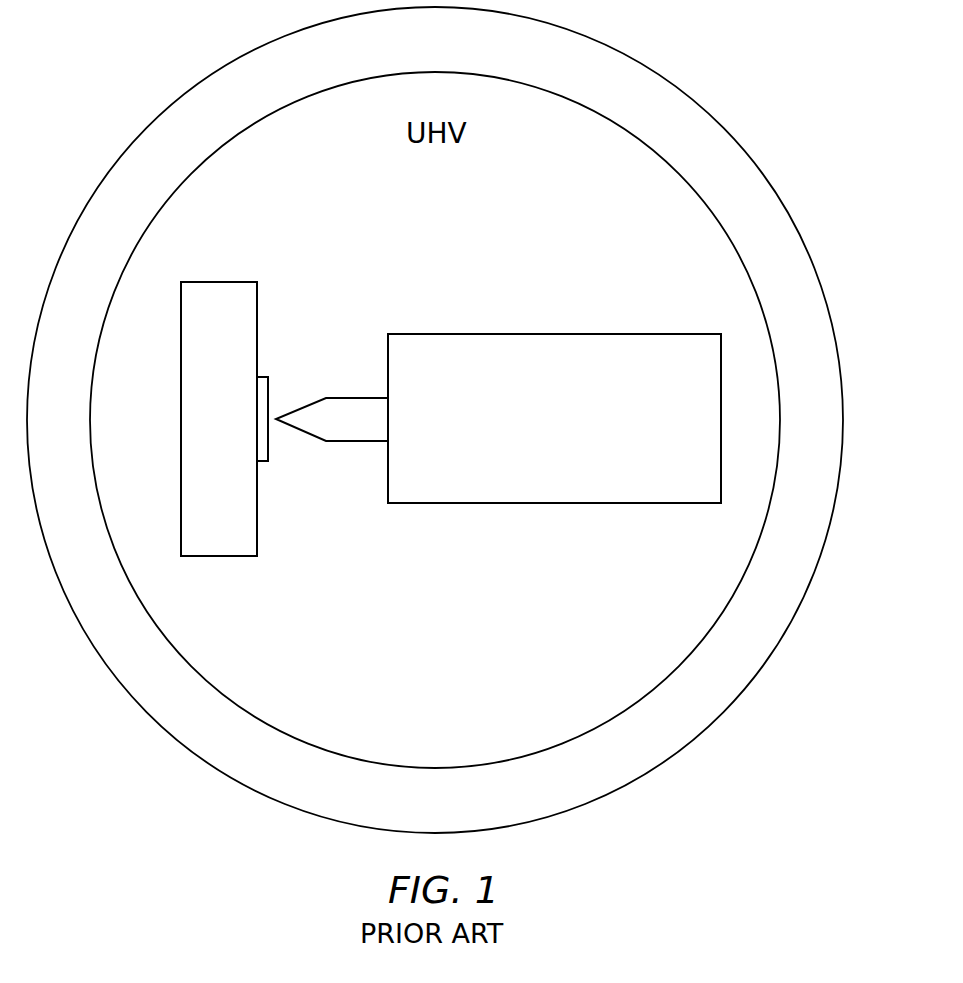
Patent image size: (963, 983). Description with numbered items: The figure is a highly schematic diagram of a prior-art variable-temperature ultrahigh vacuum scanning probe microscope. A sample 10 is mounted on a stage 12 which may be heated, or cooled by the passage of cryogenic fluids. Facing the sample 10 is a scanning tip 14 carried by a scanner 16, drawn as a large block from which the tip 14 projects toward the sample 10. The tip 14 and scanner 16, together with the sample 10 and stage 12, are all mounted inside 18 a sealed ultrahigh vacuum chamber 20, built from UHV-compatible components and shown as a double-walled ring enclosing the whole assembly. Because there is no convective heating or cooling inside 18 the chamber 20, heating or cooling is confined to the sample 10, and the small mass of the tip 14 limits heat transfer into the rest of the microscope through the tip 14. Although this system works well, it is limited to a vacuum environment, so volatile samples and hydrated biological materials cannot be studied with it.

The sample 10 is at (259, 462).
The stage 12 is at (218, 550).
The scanning tip 14 is at (367, 435).
The scanner 16 is at (573, 436).
The inside of the ultrahigh vacuum chamber 18 is at (695, 233).
The ultrahigh vacuum chamber 20 is at (800, 282).